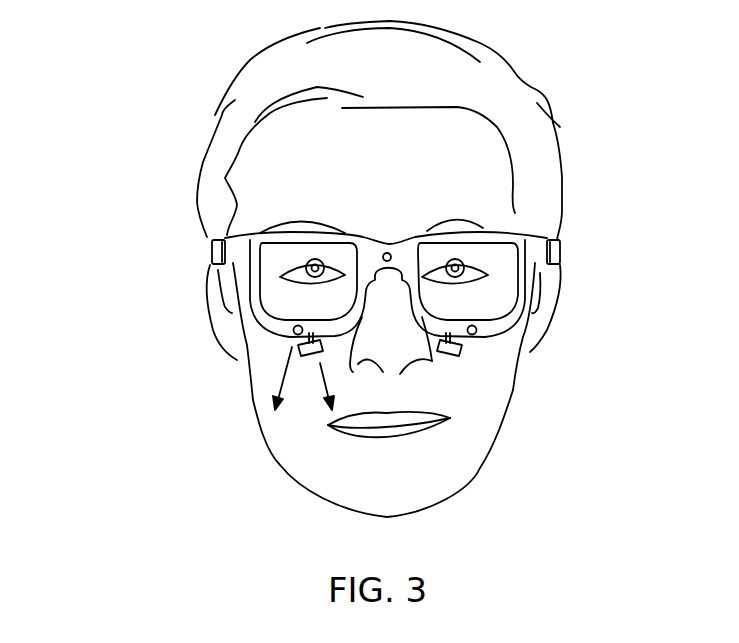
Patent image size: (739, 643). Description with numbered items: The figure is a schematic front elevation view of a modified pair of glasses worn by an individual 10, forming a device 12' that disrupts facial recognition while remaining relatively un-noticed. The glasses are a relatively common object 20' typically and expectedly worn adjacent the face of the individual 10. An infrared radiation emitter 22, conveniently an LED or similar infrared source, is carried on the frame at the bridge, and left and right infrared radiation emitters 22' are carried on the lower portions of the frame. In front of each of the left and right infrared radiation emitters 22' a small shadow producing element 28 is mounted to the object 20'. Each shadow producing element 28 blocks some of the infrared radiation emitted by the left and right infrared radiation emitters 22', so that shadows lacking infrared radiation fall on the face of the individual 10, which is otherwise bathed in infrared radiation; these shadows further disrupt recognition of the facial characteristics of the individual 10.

The individual 10 is at (185, 73).
The device 12' is at (438, 251).
The object 20' is at (343, 298).
The infrared radiation emitter 22 is at (407, 218).
The left and right infrared radiation emitters 22' is at (384, 361).
The shadow producing element 28 is at (305, 357).